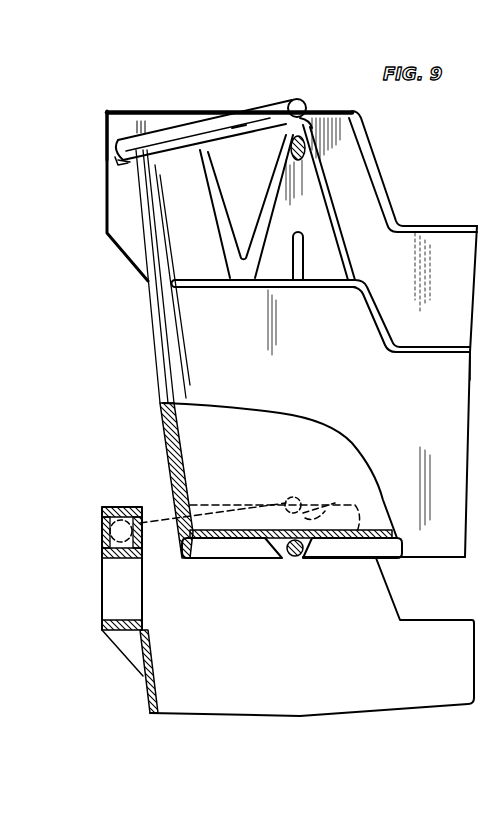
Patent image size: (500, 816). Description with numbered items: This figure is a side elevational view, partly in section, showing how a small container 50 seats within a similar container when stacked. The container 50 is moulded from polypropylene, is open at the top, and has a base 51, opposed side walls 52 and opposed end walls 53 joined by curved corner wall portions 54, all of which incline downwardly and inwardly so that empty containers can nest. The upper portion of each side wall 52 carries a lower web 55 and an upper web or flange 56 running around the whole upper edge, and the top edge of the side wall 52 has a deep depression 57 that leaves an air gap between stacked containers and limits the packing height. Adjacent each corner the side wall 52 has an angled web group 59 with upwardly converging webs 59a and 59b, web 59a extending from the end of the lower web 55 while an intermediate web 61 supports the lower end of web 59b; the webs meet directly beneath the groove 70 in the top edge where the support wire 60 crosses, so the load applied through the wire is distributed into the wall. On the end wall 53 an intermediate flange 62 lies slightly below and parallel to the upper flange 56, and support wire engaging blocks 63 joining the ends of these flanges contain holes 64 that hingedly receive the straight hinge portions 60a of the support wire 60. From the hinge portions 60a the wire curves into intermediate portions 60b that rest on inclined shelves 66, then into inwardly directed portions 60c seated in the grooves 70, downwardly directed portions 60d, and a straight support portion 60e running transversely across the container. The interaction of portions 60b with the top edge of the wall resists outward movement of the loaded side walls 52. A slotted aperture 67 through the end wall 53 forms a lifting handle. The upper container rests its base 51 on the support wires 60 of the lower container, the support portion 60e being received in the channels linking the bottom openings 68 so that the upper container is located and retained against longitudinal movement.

The rectangular container 50 is at (150, 368).
The base 51 is at (362, 540).
The side wall 52 is at (412, 421).
The end wall 53 is at (160, 410).
The curved corner wall portion 54 is at (150, 316).
The lower web 55 is at (455, 353).
The upper web or flange 56 is at (118, 111).
The depression 57 is at (428, 222).
The angled web group 59 is at (178, 183).
The upwardly converging web 59a is at (338, 220).
The upwardly converging web 59b is at (265, 208).
The support wire 60 is at (241, 107).
The straight attachment or hinge portion 60a is at (117, 149).
The intermediate portion 60b is at (210, 118).
The inwardly directed portion 60c is at (297, 99).
The downwardly directed portion 60d is at (328, 505).
The straight support portion 60e is at (338, 141).
The intermediate web 61 is at (327, 283).
The intermediate flange or web 62 is at (115, 557).
The support wire engaging block 63 is at (105, 125).
The hole 64 is at (117, 158).
The inclined shelf, web or flange 66 is at (238, 137).
The slotted aperture 67 is at (113, 588).
The bottom opening 68 is at (283, 560).
The groove 70 is at (312, 124).